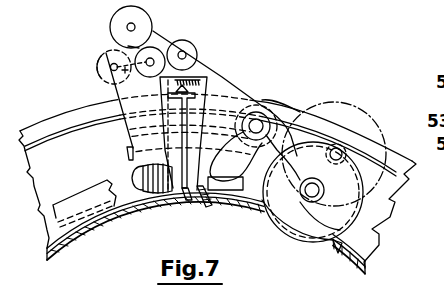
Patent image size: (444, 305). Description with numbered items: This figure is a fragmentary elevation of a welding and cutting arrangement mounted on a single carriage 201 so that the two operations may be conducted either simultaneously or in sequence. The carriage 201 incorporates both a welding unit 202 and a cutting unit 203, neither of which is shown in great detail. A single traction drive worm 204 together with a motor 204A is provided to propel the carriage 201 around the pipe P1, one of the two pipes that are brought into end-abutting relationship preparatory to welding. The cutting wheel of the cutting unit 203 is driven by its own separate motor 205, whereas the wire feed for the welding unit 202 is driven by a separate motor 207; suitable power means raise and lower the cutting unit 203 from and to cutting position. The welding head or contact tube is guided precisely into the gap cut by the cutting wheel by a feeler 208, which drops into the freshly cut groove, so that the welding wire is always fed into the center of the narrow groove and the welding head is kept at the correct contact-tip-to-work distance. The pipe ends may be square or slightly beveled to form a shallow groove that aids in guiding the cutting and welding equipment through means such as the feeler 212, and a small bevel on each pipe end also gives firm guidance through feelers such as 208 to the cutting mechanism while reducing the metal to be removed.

The carriage 201 is at (214, 64).
The welding unit 202 is at (127, 140).
The cutting unit 203 is at (300, 238).
The traction drive worm 204 is at (136, 174).
The motor 204A is at (213, 205).
The motor 205 is at (270, 100).
The motor 207 is at (104, 65).
The feeler 208 is at (197, 207).
The feeler 212 is at (330, 250).
The pipe P1 is at (108, 223).